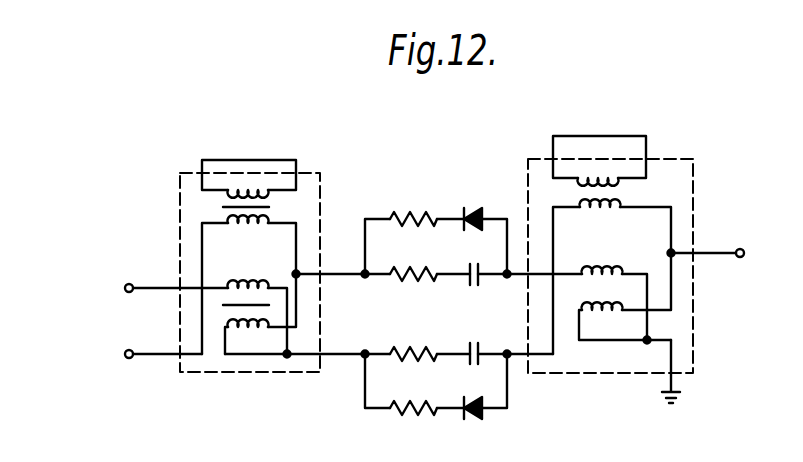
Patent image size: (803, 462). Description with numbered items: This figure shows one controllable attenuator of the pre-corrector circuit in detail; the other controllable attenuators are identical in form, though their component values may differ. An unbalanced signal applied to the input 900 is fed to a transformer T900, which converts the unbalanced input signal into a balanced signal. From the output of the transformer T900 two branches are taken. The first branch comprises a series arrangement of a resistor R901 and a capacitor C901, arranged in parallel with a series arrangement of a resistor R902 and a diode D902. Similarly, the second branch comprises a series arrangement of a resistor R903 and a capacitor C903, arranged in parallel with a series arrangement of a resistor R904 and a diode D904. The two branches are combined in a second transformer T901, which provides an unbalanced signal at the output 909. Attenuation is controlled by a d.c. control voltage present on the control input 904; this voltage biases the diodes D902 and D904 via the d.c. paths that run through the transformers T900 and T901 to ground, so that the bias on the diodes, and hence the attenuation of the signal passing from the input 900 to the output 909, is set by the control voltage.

The transformer T900 is at (313, 182).
The transformer T901 is at (672, 162).
The resistor R901 is at (412, 268).
The resistor R902 is at (407, 216).
The resistor R903 is at (407, 348).
The resistor R904 is at (393, 414).
The capacitor C901 is at (468, 284).
The capacitor C903 is at (480, 347).
The diode D902 is at (475, 207).
The diode D904 is at (473, 416).
The input 900 is at (110, 289).
The control input 904 is at (144, 355).
The output 909 is at (726, 254).